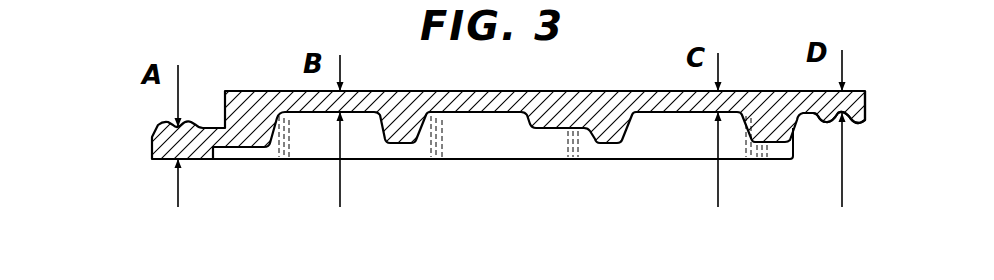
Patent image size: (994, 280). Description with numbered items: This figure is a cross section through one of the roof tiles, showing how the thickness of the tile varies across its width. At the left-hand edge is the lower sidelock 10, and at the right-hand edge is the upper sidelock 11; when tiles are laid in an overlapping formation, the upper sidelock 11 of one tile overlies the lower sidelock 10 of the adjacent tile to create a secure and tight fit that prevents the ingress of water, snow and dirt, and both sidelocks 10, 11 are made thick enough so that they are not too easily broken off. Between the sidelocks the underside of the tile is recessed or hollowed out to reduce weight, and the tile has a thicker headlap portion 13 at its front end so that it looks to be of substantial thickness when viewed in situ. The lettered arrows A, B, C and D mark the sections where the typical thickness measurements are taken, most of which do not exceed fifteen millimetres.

The lower sidelock 10 is at (156, 148).
The upper sidelock 11 is at (857, 110).
The headlap portion 13 is at (474, 136).